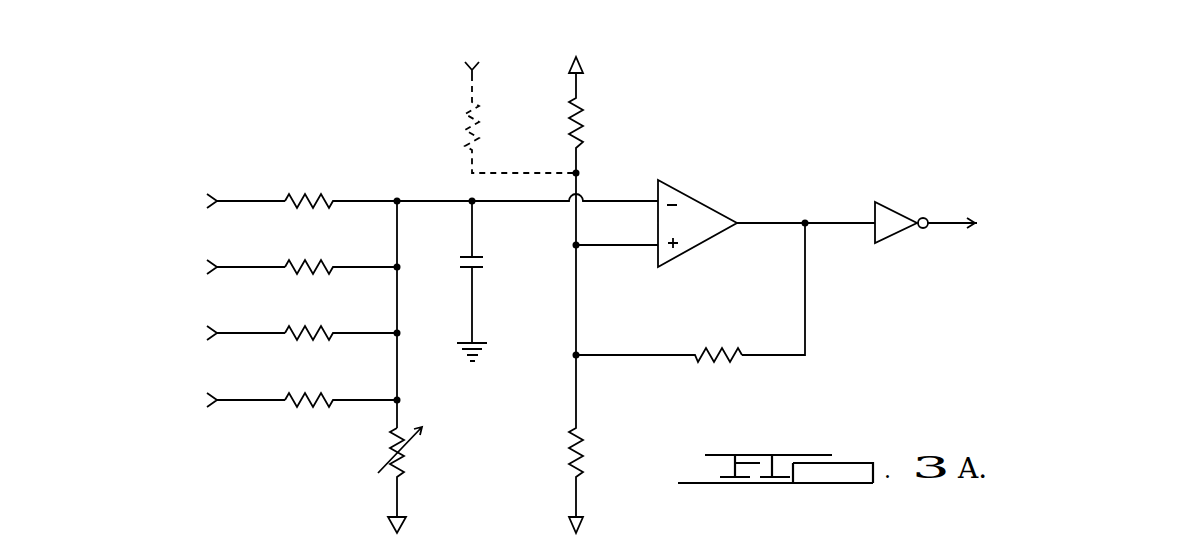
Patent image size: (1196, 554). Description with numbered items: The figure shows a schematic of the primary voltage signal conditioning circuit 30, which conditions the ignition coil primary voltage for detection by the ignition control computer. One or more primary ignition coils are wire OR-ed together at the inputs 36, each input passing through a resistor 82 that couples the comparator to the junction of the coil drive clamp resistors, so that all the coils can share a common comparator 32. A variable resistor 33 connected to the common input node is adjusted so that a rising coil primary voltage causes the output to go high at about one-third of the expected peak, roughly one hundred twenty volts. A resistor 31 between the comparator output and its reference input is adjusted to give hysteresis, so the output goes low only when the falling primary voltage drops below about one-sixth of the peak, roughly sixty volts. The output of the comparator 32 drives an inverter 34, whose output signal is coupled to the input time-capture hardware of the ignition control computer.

The primary voltage signal conditioning circuit 30 is at (609, 295).
The resistor 31 is at (722, 347).
The comparator 32 is at (712, 215).
The variable resistor 33 is at (407, 452).
The inverter 34 is at (903, 213).
The inputs 36 is at (223, 301).
The resistor 82 is at (308, 196).